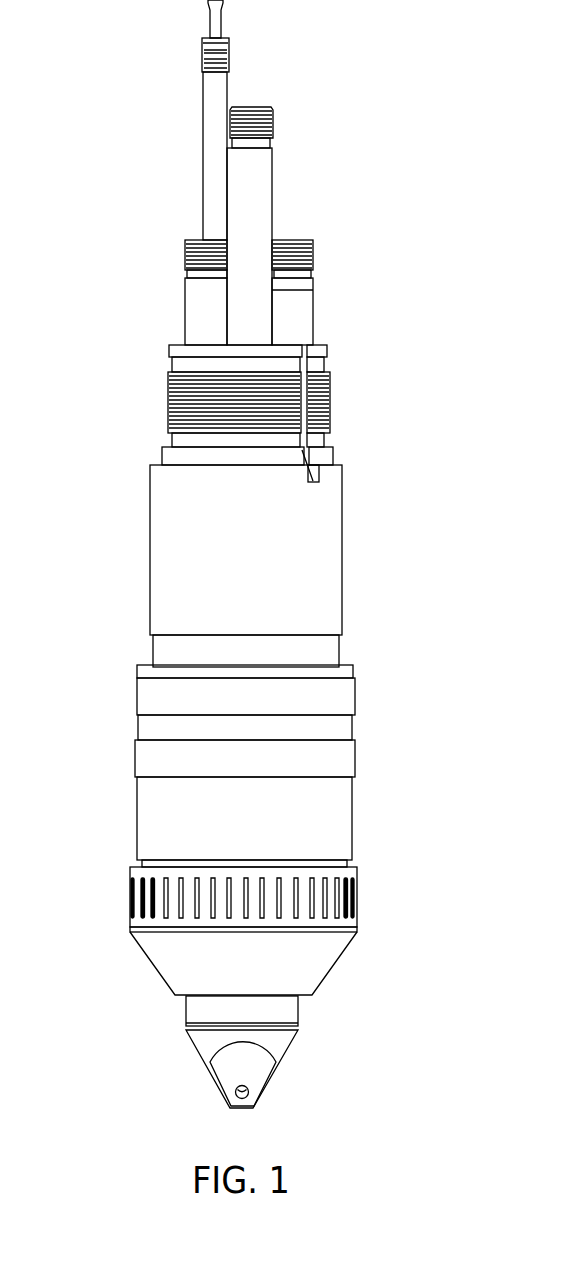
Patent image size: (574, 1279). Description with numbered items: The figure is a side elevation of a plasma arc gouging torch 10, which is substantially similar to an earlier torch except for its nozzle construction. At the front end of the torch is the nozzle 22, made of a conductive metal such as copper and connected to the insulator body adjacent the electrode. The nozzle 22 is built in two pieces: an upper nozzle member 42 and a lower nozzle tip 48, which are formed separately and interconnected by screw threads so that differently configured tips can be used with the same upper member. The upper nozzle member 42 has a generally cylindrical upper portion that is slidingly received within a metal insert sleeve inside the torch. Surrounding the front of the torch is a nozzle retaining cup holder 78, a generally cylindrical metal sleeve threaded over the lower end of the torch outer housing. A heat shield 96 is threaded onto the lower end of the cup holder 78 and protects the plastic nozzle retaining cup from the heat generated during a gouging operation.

The plasma arc gouging torch 10 is at (394, 320).
The nozzle 22 is at (297, 1041).
The upper nozzle member 42 is at (192, 1008).
The lower nozzle tip 48 is at (227, 1073).
The nozzle retaining cup holder 78 is at (342, 702).
The heat shield 96 is at (325, 953).